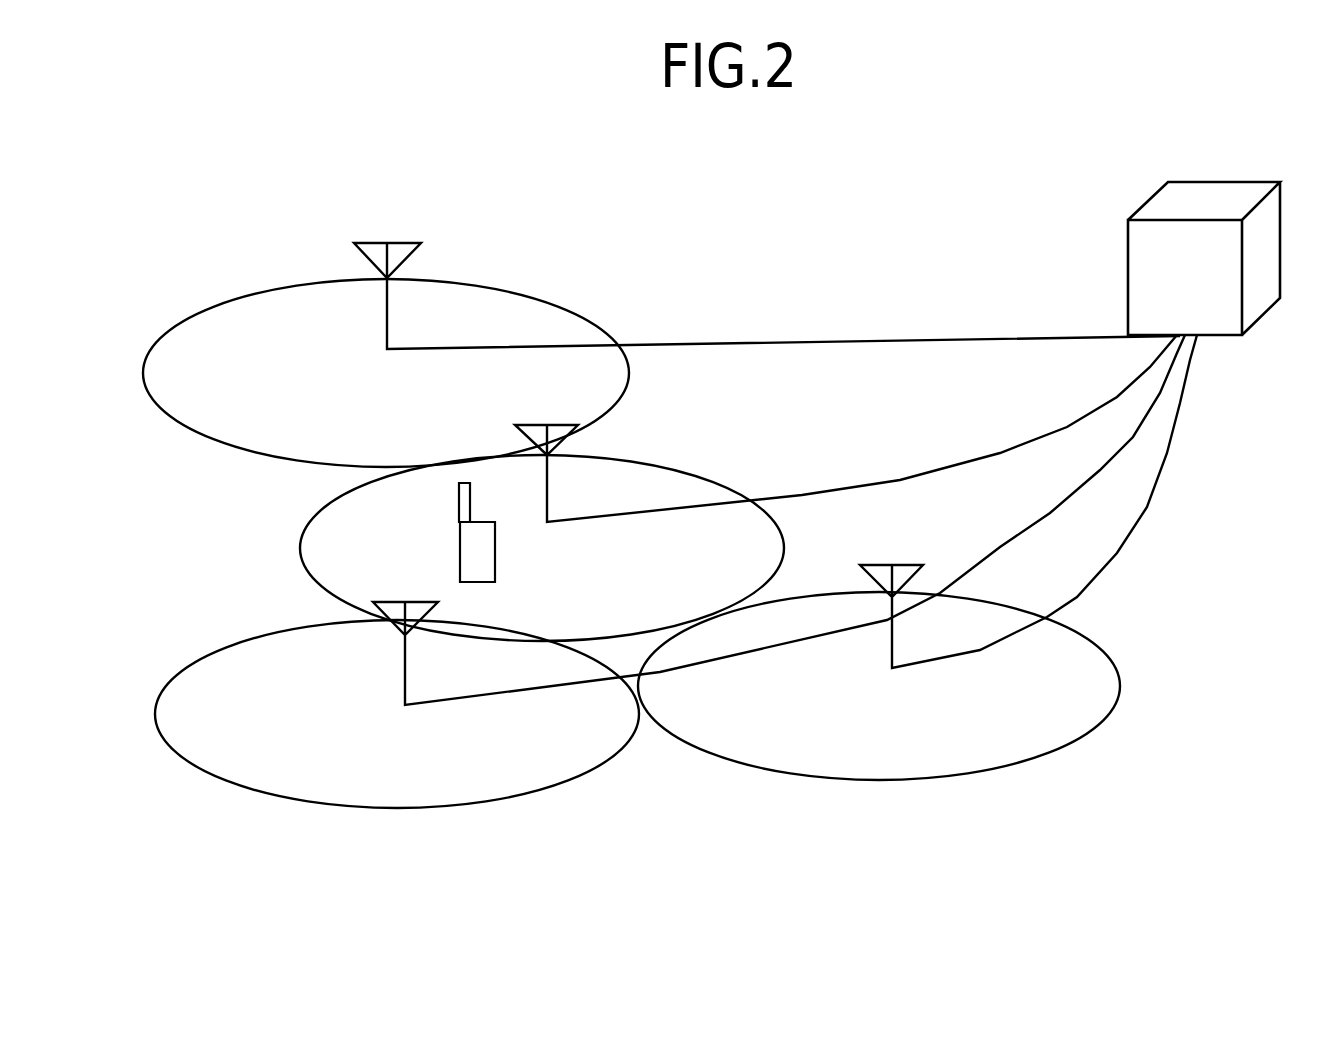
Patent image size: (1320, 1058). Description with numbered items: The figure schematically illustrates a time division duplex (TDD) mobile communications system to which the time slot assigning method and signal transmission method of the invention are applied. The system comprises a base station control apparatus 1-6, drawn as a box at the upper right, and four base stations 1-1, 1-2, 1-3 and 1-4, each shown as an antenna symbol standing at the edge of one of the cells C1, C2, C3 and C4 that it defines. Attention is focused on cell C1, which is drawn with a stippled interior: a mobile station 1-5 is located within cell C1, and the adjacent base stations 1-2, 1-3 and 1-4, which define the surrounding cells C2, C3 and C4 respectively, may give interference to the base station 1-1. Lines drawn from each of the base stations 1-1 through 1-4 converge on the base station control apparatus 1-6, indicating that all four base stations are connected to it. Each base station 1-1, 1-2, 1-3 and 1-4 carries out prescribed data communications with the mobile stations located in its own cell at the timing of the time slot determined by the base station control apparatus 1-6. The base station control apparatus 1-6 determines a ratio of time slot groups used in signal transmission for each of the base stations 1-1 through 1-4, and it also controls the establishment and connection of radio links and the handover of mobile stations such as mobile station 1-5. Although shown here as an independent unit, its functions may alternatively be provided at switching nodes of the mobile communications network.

The base station 1-1 is at (846, 428).
The base station 1-2 is at (1028, 501).
The base station 1-3 is at (760, 520).
The base station 1-4 is at (767, 290).
The mobile station 1-5 is at (515, 539).
The base station control apparatus 1-6 is at (1204, 290).
The cell C1 is at (723, 490).
The cell C2 is at (795, 775).
The cell C3 is at (258, 788).
The cell C4 is at (192, 430).